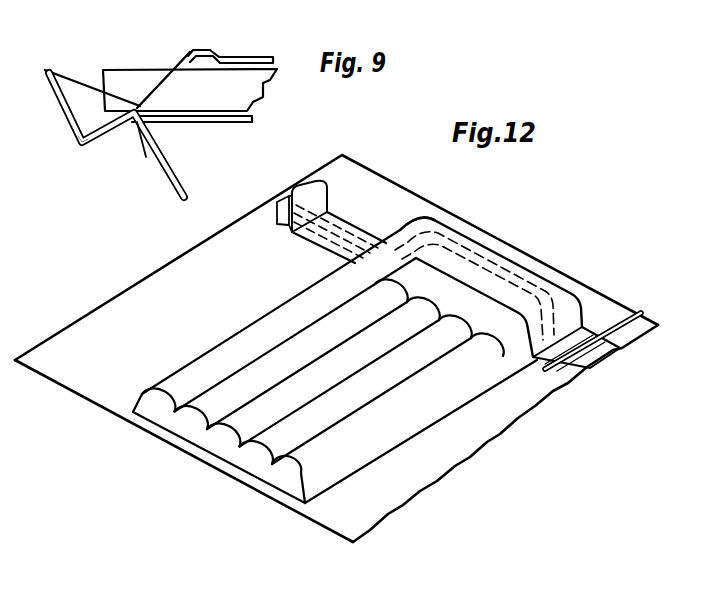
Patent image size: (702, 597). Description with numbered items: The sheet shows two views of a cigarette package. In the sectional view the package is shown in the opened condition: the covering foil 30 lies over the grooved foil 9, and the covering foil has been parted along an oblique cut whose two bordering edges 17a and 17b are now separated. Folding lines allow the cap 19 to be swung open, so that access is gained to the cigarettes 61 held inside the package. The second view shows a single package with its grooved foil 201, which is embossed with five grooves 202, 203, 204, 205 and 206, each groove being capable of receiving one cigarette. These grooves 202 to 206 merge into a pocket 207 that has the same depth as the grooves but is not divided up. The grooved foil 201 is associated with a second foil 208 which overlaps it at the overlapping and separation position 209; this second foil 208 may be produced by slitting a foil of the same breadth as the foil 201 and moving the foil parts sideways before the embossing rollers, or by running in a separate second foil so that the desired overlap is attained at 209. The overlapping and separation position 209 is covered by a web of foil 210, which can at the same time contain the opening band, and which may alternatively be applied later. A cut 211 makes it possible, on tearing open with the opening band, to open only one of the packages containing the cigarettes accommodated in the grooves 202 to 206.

In FIG. 9, the grooved foil 9 is at (258, 62).
In FIG. 9, the bordering edge of the oblique cut 17a is at (87, 85).
In FIG. 9, the bordering edge of the oblique cut 17b is at (168, 72).
In FIG. 9, the cap 19 is at (89, 150).
In FIG. 9, the covering foil 30 is at (215, 113).
In FIG. 9, the cigarettes 61 is at (123, 85).
In FIG. 12, the grooved foil 201 is at (66, 369).
In FIG. 12, the groove 202 is at (453, 360).
In FIG. 12, the groove 203 is at (388, 375).
In FIG. 12, the groove 204 is at (297, 383).
In FIG. 12, the groove 205 is at (313, 342).
In FIG. 12, the groove 206 is at (320, 303).
In FIG. 12, the pocket 207 is at (436, 280).
In FIG. 12, the second foil 208 is at (349, 212).
In FIG. 12, the overlapping and separation position 209 is at (413, 204).
In FIG. 12, the web of foil 210 is at (310, 233).
In FIG. 12, the cut 211 is at (617, 346).